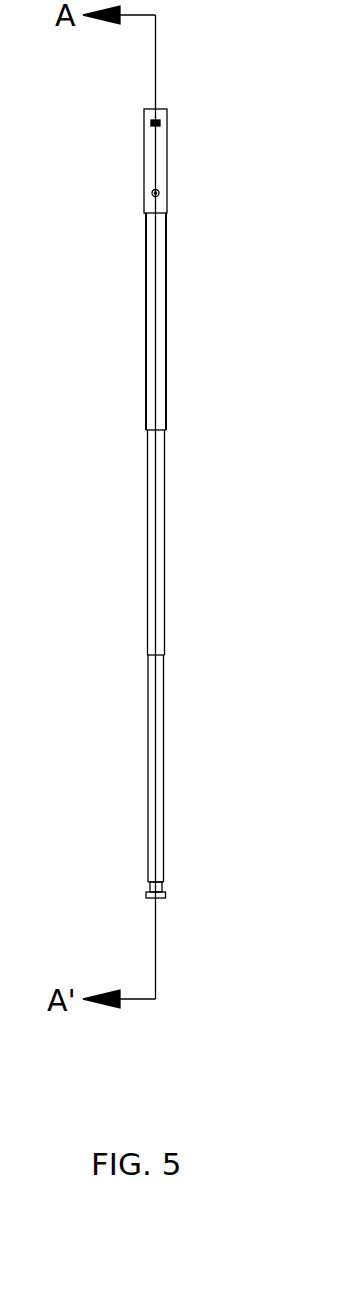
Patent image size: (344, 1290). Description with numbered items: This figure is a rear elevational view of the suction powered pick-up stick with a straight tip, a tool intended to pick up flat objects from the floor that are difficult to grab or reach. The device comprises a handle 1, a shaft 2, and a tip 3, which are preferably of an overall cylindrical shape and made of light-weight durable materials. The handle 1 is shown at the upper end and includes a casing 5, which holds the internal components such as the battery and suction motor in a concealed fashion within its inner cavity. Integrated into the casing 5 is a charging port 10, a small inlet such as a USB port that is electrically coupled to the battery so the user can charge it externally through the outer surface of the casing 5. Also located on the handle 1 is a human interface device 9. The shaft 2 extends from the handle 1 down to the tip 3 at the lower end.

The handle 1 is at (150, 269).
The shaft 2 is at (129, 600).
The tip 3 is at (137, 888).
The casing 5 is at (163, 161).
The human interface device 9 is at (168, 194).
The charging port 10 is at (163, 123).